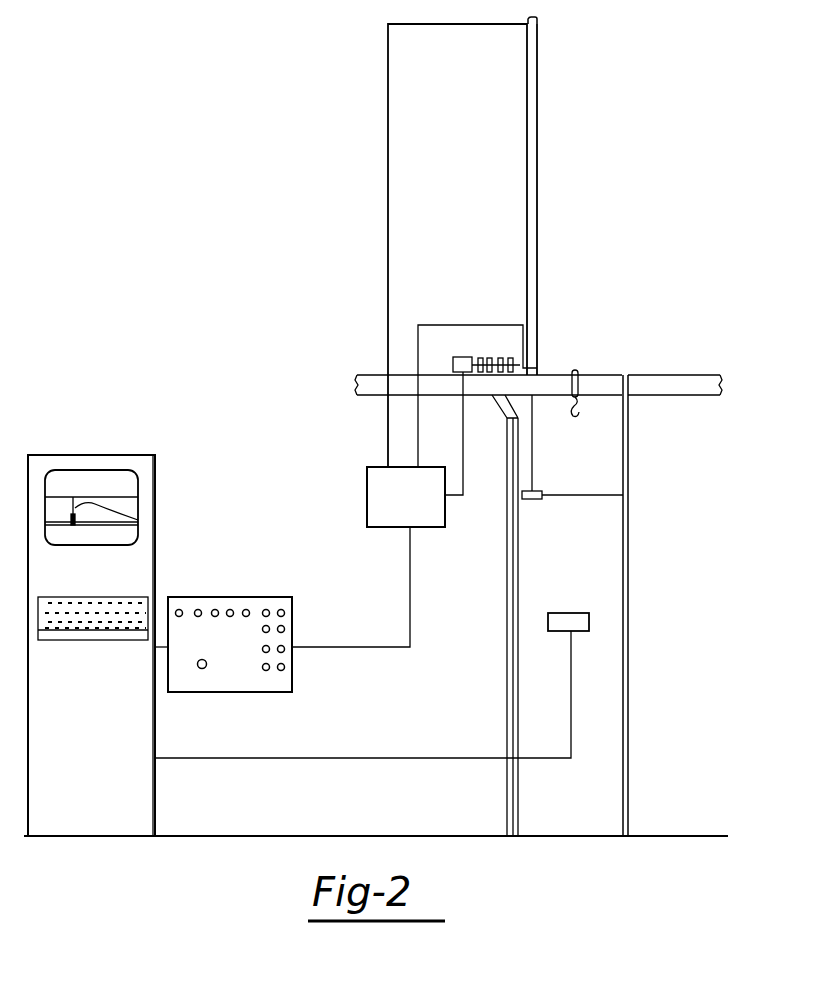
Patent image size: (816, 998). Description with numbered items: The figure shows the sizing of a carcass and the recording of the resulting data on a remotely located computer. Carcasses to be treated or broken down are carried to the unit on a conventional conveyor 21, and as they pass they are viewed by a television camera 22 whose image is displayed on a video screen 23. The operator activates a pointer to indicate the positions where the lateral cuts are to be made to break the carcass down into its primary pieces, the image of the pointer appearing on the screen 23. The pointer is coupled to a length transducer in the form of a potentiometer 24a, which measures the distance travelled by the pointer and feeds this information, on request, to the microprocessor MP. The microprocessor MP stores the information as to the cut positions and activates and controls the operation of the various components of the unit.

The conveyor 21 is at (677, 388).
The television camera 22 is at (565, 621).
The video screen 23 is at (138, 478).
The potentiometer 24a is at (463, 358).
The microprocessor MP is at (76, 442).